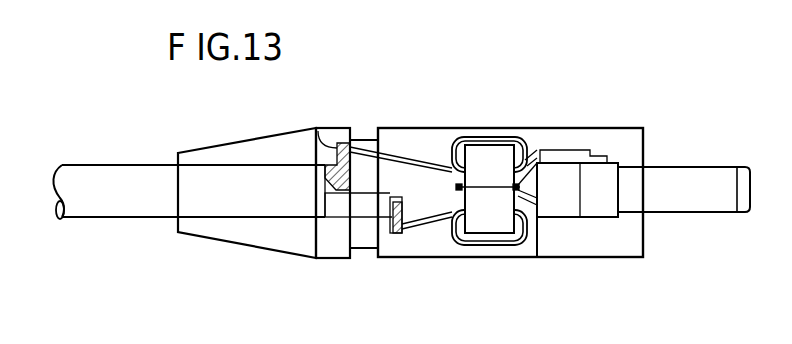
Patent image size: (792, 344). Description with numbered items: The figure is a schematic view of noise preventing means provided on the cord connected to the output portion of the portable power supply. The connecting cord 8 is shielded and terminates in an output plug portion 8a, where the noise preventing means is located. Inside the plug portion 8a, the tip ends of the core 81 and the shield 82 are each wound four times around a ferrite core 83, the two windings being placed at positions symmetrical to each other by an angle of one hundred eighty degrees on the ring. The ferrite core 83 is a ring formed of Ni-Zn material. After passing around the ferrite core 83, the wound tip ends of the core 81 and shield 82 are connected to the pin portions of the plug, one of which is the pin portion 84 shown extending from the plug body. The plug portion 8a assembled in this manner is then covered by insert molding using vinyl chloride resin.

The connecting cord 8 is at (158, 220).
The output plug portion 8a is at (482, 250).
The core 81 is at (333, 217).
The shield 82 is at (317, 128).
The ferrite core 83 is at (487, 223).
The pin portion 84 is at (718, 200).